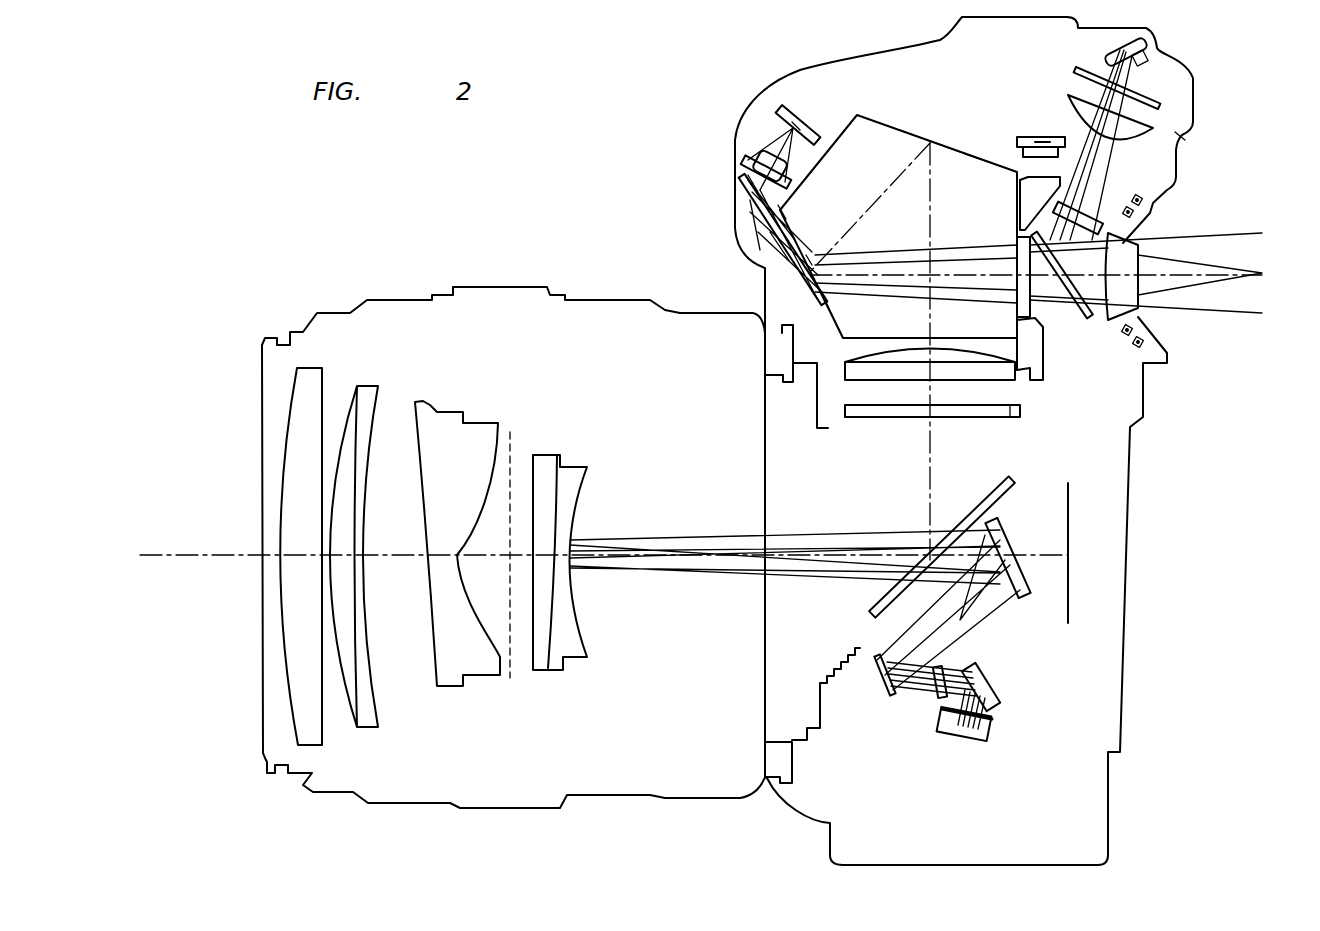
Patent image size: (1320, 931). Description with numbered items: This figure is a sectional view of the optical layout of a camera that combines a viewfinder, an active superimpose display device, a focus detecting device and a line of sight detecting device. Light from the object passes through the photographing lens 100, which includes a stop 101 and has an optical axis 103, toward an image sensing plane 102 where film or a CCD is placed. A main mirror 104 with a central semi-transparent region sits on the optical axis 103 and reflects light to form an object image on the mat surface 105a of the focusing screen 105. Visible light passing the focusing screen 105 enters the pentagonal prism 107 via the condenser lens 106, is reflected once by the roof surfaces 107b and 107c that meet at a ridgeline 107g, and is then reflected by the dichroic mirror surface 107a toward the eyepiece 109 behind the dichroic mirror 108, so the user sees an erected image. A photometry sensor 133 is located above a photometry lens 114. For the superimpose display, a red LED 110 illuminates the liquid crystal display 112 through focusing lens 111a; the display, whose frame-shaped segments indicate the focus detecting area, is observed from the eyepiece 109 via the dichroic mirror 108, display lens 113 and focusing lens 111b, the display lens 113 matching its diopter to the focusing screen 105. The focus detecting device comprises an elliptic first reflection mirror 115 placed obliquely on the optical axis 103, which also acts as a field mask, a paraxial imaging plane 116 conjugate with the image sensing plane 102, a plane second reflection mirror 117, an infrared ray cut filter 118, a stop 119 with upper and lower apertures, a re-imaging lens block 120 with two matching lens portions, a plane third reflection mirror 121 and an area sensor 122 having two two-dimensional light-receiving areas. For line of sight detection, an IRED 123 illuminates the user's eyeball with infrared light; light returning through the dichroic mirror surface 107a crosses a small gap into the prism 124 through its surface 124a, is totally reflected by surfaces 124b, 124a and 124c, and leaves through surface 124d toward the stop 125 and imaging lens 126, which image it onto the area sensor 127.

The photographing lens 100 is at (405, 295).
The stop 101 is at (512, 434).
The image sensing plane 102 is at (1068, 600).
The optical axis 103 is at (168, 572).
The main mirror 104 is at (985, 495).
The focusing screen 105 is at (1020, 412).
The mat surface 105a is at (1020, 405).
The condenser lens 106 is at (845, 368).
The pentagonal prism 107 is at (873, 130).
The dichroic mirror surface 107a is at (830, 310).
The roof surface 107b is at (940, 160).
The roof surface 107c is at (915, 135).
The ridgeline 107g is at (977, 158).
The dichroic mirror 108 is at (1092, 320).
The eyepiece 109 is at (1195, 248).
The red LED 110 is at (1158, 50).
The focusing lens 111a is at (1165, 70).
The focusing lens 111b is at (1180, 136).
The liquid crystal display 112 is at (1158, 97).
The display lens 113 is at (1110, 193).
The photometry lens 114 is at (1020, 208).
The first reflection mirror 115 is at (1015, 532).
The paraxial imaging plane 116 is at (990, 618).
The second reflection mirror 117 is at (885, 690).
The infrared ray cut filter 118 is at (935, 700).
The stop 119 is at (975, 668).
The re-imaging lens block 120 is at (940, 734).
The third reflection mirror 121 is at (1000, 705).
The area sensor 122 is at (985, 745).
The IRED 123 is at (1150, 206).
The prism 124 is at (760, 233).
The surface 124a is at (790, 222).
The surface 124b is at (790, 262).
The surface 124c is at (750, 180).
The surface 124d is at (745, 162).
The stop 125 is at (752, 162).
The imaging lens 126 is at (742, 150).
The area sensor 127 is at (791, 105).
The photometry sensor 133 is at (1032, 137).